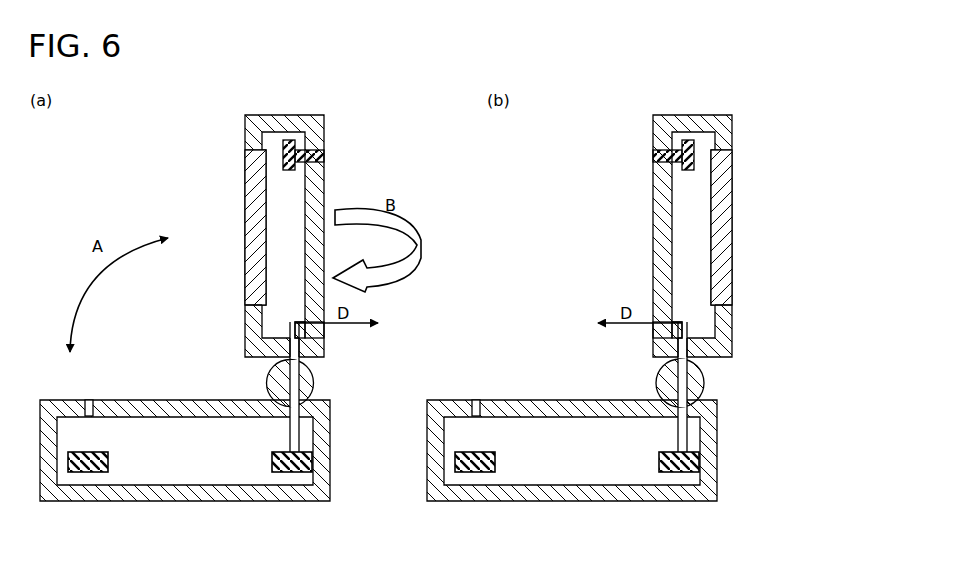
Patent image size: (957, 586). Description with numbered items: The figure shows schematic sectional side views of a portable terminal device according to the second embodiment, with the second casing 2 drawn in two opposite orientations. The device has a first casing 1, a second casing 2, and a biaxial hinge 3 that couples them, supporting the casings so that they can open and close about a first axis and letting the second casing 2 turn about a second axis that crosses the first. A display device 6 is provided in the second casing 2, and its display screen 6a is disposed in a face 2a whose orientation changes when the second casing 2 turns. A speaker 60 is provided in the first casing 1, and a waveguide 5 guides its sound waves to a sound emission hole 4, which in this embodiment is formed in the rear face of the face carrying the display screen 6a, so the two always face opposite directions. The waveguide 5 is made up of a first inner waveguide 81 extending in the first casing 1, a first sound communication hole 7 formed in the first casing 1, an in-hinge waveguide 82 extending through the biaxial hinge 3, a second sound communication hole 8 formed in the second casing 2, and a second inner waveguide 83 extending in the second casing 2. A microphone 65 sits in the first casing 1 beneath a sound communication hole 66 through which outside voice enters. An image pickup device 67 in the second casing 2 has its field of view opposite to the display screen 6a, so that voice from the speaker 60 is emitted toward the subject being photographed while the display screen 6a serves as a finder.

The first casing 1 is at (150, 501).
The second casing 2 is at (324, 150).
The face 2a is at (245, 143).
The biaxial hinge 3 is at (314, 389).
The sound emission hole 4 is at (317, 332).
The waveguide 5 is at (301, 382).
The display device 6 is at (245, 193).
The display screen 6a is at (245, 259).
The first sound communication hole 7 is at (307, 407).
The second sound communication hole 8 is at (306, 348).
The speaker 60 is at (291, 472).
The microphone 65 is at (90, 472).
The sound communication hole 66 is at (91, 400).
The image pickup device 67 is at (285, 140).
The first inner waveguide 81 is at (302, 437).
The in-hinge waveguide 82 is at (288, 383).
The second inner waveguide 83 is at (286, 328).